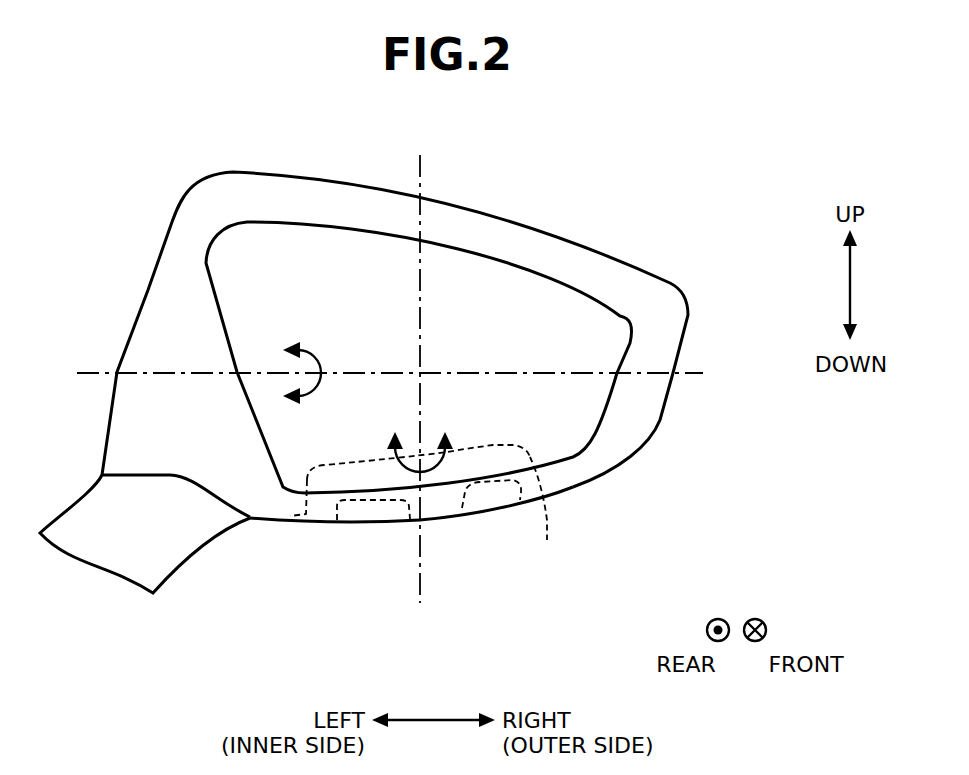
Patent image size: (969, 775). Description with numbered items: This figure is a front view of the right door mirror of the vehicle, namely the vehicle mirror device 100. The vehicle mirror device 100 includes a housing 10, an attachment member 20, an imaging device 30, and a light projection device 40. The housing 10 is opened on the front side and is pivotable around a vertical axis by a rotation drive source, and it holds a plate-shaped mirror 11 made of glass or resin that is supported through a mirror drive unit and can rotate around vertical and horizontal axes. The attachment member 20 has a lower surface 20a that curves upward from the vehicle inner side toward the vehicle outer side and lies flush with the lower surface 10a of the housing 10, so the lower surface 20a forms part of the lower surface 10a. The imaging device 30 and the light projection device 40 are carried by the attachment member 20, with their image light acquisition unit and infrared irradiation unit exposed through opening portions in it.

The vehicle mirror device 100 is at (226, 151).
The housing 10 is at (653, 297).
The lower surface of the housing 10a is at (577, 488).
The mirror 11 is at (580, 413).
The attachment member 20 is at (290, 516).
The lower surface of the attachment member 20a is at (547, 540).
The imaging device 30 is at (375, 508).
The light projection device 40 is at (492, 498).